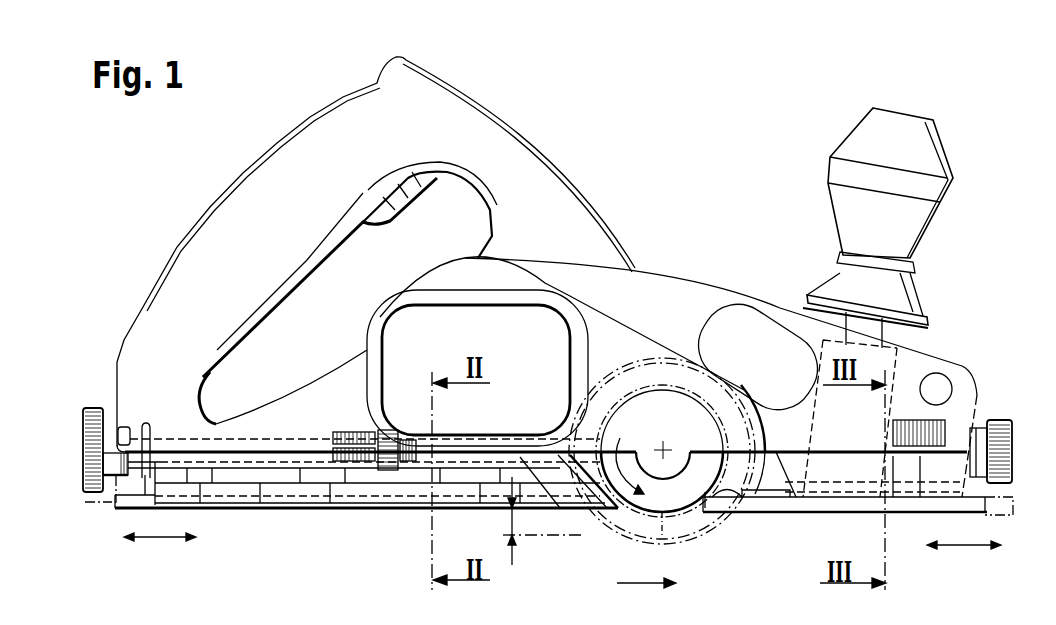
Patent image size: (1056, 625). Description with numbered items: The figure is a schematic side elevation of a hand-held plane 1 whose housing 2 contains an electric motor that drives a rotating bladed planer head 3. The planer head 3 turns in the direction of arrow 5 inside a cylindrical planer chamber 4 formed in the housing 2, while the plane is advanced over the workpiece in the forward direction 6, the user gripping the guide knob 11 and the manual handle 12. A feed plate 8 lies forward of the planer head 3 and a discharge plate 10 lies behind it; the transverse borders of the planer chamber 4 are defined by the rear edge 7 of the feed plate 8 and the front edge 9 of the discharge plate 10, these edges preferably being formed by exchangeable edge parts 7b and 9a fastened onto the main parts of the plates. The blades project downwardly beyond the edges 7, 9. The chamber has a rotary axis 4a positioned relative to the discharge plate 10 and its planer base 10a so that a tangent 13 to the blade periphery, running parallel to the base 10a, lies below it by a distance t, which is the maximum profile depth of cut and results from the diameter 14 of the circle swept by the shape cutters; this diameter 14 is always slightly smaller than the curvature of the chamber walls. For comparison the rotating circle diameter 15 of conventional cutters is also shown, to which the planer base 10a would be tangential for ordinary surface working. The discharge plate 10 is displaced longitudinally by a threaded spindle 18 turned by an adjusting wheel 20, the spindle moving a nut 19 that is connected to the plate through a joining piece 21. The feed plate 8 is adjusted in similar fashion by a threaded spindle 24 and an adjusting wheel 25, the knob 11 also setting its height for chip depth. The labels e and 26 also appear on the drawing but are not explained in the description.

The hand-held plane 1 is at (590, 190).
The housing 2 is at (690, 292).
The bladed planer head 3 is at (672, 505).
The cylindrical planer chamber 4 is at (776, 462).
The rotary axis 4a is at (666, 446).
The direction of rotation arrow 5 is at (630, 456).
The forward direction 6 is at (620, 584).
The rear edge of the feed plate 7 is at (697, 508).
The exchangeable edge part 7b is at (737, 497).
The feed plate 8 is at (808, 503).
The front edge of the discharge plate 9 is at (612, 488).
The exchangeable edge part 9a is at (600, 505).
The discharge plate 10 is at (304, 507).
The planer base 10a is at (218, 508).
The guide knob 11 is at (862, 143).
The manual handle 12 is at (232, 196).
The tangent 13 is at (520, 540).
The diameter of the rotating circle 14 is at (600, 500).
The rotating circle diameter 15 is at (660, 535).
The threaded spindle 18 is at (273, 458).
The nut 19 is at (370, 467).
The adjusting wheel 20 is at (91, 408).
The joining piece 21 is at (386, 480).
The threaded spindle 24 is at (968, 384).
The adjusting wheel 25 is at (1005, 458).
The clamping screw 26 is at (898, 377).
The cutting circle offset e is at (617, 370).
The distance t is at (511, 521).